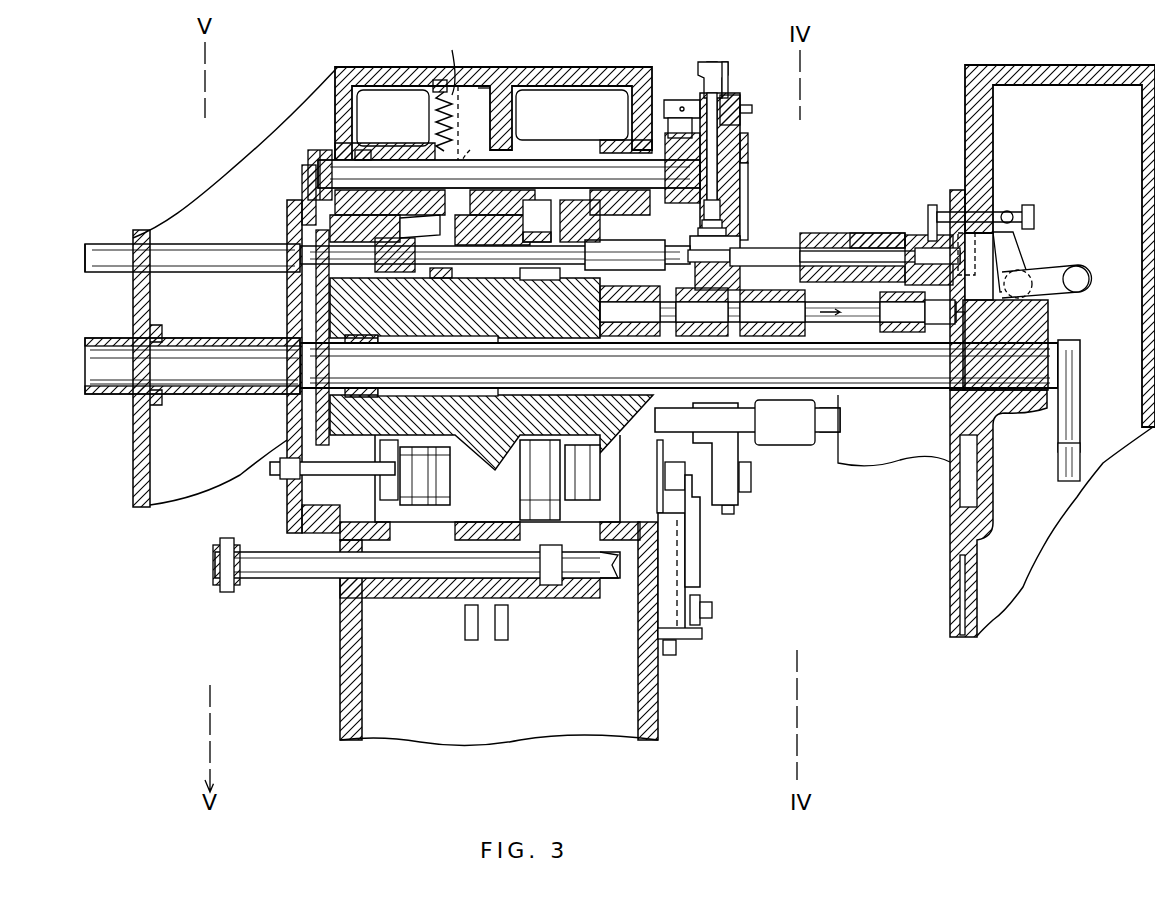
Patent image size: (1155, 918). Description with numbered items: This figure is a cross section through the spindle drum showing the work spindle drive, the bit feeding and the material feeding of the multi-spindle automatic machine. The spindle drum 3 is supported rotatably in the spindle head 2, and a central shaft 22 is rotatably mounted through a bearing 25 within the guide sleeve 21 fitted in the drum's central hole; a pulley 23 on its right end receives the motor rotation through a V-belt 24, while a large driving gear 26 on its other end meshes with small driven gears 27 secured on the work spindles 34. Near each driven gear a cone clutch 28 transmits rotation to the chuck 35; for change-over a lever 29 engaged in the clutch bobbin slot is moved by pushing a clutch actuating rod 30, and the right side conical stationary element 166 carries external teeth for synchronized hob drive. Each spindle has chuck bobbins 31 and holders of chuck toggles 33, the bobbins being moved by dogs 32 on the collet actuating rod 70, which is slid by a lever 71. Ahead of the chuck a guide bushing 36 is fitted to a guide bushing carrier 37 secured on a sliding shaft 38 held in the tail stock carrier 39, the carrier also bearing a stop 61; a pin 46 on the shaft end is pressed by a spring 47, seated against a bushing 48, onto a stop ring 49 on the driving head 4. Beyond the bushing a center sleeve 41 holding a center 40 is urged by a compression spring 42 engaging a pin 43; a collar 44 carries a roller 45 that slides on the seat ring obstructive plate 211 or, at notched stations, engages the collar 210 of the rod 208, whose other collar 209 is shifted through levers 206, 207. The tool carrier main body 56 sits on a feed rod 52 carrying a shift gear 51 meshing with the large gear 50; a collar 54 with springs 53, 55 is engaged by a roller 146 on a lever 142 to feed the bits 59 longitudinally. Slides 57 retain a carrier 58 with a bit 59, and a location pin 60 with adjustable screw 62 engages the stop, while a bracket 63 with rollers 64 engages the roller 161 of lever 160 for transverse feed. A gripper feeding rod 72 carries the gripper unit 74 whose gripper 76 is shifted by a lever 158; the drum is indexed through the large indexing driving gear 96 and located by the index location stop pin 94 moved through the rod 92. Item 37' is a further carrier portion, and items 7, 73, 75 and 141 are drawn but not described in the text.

The spindle head 2 is at (362, 82).
The spindle drum 3 is at (474, 436).
The driving head 4 is at (1075, 68).
The pipe 7 is at (220, 258).
The guide sleeve 21 is at (965, 372).
The seat ring obstructive plate 211 is at (955, 525).
The central shaft 22 is at (495, 378).
The pulley 23 is at (1068, 385).
The V-belt 24 is at (1072, 458).
The bearing 25 is at (360, 338).
The large driving gear 26 is at (300, 320).
The small driven gears 27 is at (300, 278).
The cone clutch 28 is at (398, 596).
The lever 29 is at (420, 540).
The clutch actuating rod 30 is at (278, 467).
The chuck bobbins 31 is at (534, 232).
The dogs 32 is at (554, 586).
The chuck toggles 33 is at (582, 232).
The work spindles 34 is at (568, 280).
The chuck 35 is at (634, 269).
The guide bushing 36 is at (740, 248).
The guide bushing carriers 37 is at (721, 409).
The bearing 37' is at (747, 404).
The sliding shaft 38 is at (640, 310).
The tail stock carrier 39 is at (812, 234).
The center 40 is at (715, 262).
The center sleeve 41 is at (796, 256).
The compression spring 42 is at (838, 235).
The pin 43 is at (880, 240).
The collar 44 is at (915, 245).
The roller 45 is at (945, 214).
The pin 46 is at (920, 322).
The spring 47 is at (884, 324).
The bushing 48 is at (836, 320).
The stop ring 49 is at (964, 333).
The large gear for shifting 50 is at (310, 188).
The shift gear 51 is at (322, 150).
The feed rod 52 is at (381, 166).
The spring 53 is at (420, 150).
The collar 54 is at (484, 86).
The spring 55 is at (449, 61).
The main body of tool carrier 56 is at (720, 160).
The slides for transverse feed 57 is at (740, 140).
The carrier 58 is at (742, 150).
The bit 59 is at (748, 186).
The location pin 60 is at (718, 207).
The stop 61 is at (705, 222).
The adjustable screw 62 is at (714, 62).
The bracket 63 is at (700, 95).
The rollers 64 is at (672, 100).
The collet actuating rod 70 is at (316, 578).
The lever 71 is at (230, 588).
The gripper feeding rod 72 is at (596, 582).
The housing wall 73 is at (640, 632).
The gripper unit 74 is at (692, 648).
The plate 75 is at (696, 570).
The gripper 76 is at (692, 505).
The rod 92 is at (508, 638).
The index location stop pin 94 is at (472, 642).
The large indexing driving gear 96 is at (295, 512).
The lever 141 is at (422, 222).
The lever 142 is at (479, 154).
The roller 146 is at (480, 125).
The lever 158 is at (712, 610).
The lever 160 is at (668, 125).
The roller 161 is at (722, 108).
The right side conical stationary element 166 is at (495, 290).
The lever 206 is at (1020, 268).
The lever 207 is at (1045, 280).
The rod for sleeve sliding 208 is at (1000, 218).
The collar 209 is at (1030, 214).
The collar 210 is at (932, 212).